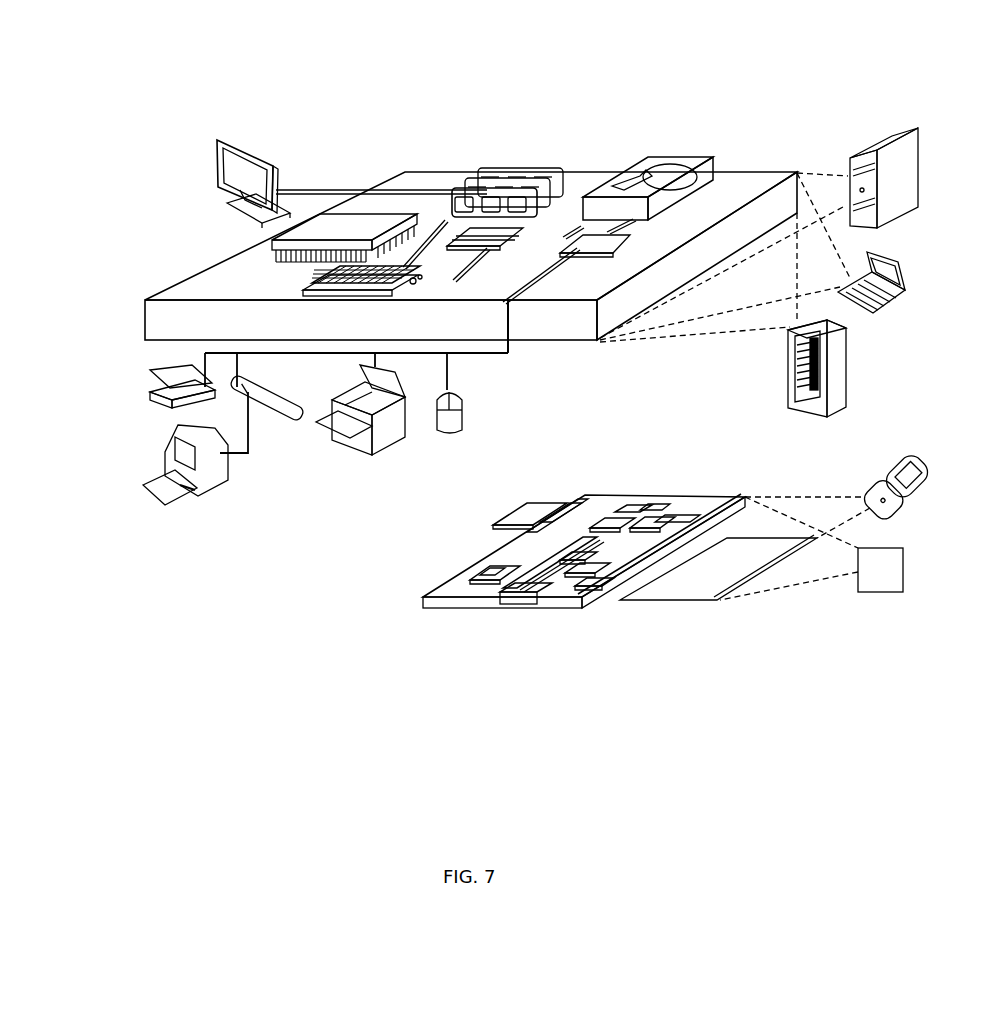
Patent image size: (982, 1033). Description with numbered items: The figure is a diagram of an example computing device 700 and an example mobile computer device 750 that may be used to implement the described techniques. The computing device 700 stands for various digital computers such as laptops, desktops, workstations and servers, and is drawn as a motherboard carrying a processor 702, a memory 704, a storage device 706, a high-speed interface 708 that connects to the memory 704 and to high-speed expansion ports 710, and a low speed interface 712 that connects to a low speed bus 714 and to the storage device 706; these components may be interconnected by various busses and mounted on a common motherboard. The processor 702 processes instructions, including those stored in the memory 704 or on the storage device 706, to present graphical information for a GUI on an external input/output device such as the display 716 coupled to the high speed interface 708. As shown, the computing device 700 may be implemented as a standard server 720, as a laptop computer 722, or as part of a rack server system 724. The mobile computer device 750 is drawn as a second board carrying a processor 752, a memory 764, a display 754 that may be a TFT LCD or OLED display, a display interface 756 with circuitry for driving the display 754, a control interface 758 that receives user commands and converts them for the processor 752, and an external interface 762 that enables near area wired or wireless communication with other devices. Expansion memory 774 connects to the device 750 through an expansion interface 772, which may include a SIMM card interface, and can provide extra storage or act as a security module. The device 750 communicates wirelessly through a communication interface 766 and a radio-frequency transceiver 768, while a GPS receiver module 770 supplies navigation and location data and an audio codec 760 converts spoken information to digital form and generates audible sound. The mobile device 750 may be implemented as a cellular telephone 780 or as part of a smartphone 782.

The computing device 700 is at (82, 95).
The processor 702 is at (247, 246).
The memory 704 is at (490, 166).
The storage device 706 is at (652, 158).
The high-speed interface 708 is at (445, 220).
The high-speed expansion ports 710 is at (318, 278).
The low speed interface 712 is at (597, 242).
The low speed bus 714 is at (510, 308).
The display 716 is at (216, 138).
The standard server 720 is at (850, 160).
The laptop computer 722 is at (870, 254).
The rack server system 724 is at (789, 380).
The mobile computer device 750 is at (570, 478).
The processor 752 is at (532, 597).
The display 754 is at (717, 602).
The display interface 756 is at (592, 597).
The control interface 758 is at (613, 588).
The audio codec 760 is at (617, 587).
The external interface 762 is at (517, 597).
The memory 764 is at (482, 567).
The communication interface 766 is at (612, 518).
The transceiver 768 is at (665, 522).
The GPS receiver module 770 is at (640, 518).
The expansion interface 772 is at (565, 503).
The expansion memory 774 is at (518, 503).
The cellular telephone 780 is at (899, 458).
The smartphone 782 is at (886, 548).